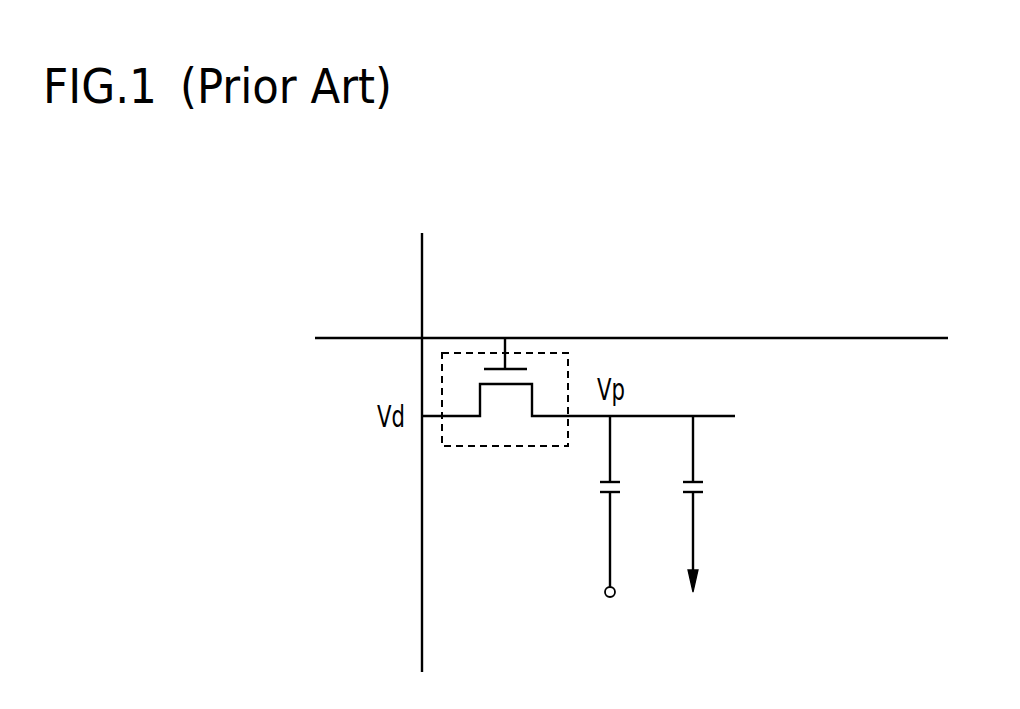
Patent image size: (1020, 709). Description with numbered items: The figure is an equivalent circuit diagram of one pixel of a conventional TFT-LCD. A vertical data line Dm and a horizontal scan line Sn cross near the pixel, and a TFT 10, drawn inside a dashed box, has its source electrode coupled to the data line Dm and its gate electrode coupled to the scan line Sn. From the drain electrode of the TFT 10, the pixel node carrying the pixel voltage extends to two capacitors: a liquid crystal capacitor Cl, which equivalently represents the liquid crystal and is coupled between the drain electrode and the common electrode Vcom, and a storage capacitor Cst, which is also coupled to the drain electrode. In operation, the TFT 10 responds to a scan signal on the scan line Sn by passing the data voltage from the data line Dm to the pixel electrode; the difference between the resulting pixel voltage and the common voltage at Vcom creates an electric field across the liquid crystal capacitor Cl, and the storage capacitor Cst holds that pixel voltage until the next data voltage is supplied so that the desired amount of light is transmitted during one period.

The TFT 10 is at (552, 353).
The data line Dm is at (423, 433).
The scan line Sn is at (639, 358).
The liquid crystal capacitor Cl is at (595, 501).
The storage capacitor Cst is at (720, 504).
The common electrode Vcom is at (608, 611).